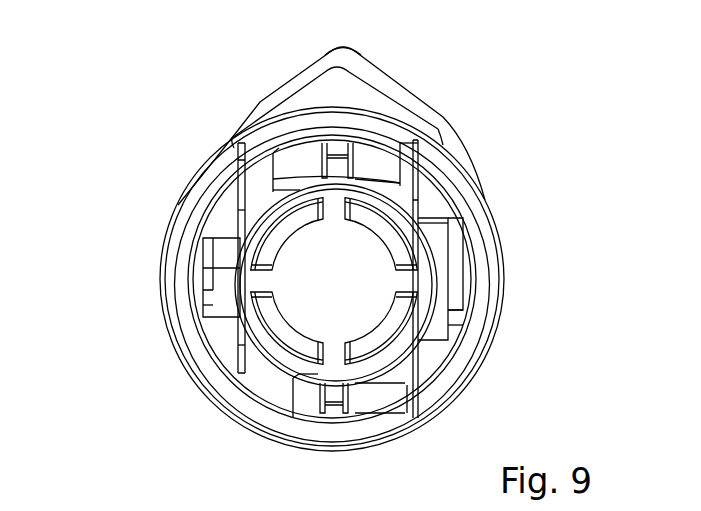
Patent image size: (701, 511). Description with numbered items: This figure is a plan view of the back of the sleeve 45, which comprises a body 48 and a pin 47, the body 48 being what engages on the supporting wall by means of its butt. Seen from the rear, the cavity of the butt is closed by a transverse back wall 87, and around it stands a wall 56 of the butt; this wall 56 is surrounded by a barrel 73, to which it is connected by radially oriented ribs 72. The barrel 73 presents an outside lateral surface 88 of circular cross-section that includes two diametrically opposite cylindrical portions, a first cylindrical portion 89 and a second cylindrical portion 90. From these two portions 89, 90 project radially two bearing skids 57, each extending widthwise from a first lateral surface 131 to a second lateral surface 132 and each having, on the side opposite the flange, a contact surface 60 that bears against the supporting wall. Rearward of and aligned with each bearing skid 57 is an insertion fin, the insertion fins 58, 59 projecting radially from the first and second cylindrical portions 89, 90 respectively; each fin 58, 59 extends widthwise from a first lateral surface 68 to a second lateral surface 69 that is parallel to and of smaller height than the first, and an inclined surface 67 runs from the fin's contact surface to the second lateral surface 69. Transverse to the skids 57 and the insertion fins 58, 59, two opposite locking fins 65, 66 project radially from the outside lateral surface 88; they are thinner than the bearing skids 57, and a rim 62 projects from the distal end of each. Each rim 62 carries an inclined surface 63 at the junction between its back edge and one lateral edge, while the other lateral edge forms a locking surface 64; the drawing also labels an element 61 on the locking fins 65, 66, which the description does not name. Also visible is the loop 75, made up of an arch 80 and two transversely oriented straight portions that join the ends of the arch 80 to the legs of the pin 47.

The sleeve 45 is at (123, 60).
The pin 47 is at (448, 88).
The body 48 is at (478, 410).
The wall 56 is at (372, 238).
The bearing skid 57 is at (400, 145).
The insertion fin 58 is at (390, 170).
The insertion fin 59 is at (360, 398).
The contact surface 60 is at (320, 130).
The clip block 61 is at (442, 237).
The rim 62 is at (458, 291).
The inclined surface 63 is at (466, 323).
The locking surface 64 is at (453, 209).
The locking fin 65 is at (440, 253).
The locking fin 66 is at (227, 268).
The inclined surface 67 is at (381, 390).
The first lateral surface 68 is at (293, 403).
The second lateral surface 69 is at (381, 405).
The ribs 72 is at (390, 288).
The barrel 73 is at (457, 309).
The loop 75 is at (390, 90).
The arch 80 is at (348, 58).
The transverse back wall 87 is at (232, 318).
The outside lateral surface 88 is at (240, 225).
The first cylindrical portion 89 is at (269, 196).
The second cylindrical portion 90 is at (281, 371).
The first lateral surface 131 is at (239, 191).
The second lateral surface 132 is at (425, 209).